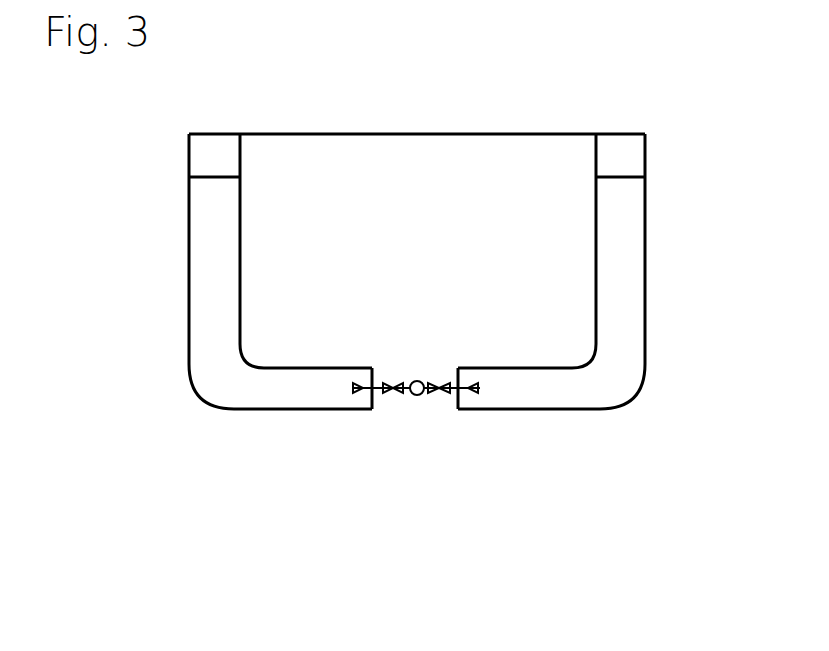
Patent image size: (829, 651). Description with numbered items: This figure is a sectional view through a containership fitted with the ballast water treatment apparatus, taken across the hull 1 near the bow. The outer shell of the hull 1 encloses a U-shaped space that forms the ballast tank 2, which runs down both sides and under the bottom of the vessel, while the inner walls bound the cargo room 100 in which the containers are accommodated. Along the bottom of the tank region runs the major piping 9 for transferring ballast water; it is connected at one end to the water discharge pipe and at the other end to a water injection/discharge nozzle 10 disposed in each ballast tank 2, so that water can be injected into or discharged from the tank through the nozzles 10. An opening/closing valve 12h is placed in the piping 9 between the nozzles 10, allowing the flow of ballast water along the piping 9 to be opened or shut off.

The hull 1 is at (189, 155).
The ballast tank 2 is at (203, 262).
The cargo room 100 is at (447, 236).
The major piping 9 is at (418, 380).
The water injection/discharge nozzle 10 is at (352, 388).
The opening/closing valve 12h is at (438, 398).